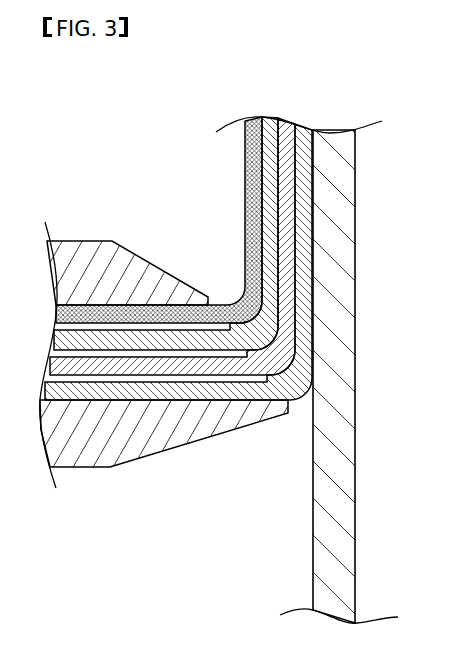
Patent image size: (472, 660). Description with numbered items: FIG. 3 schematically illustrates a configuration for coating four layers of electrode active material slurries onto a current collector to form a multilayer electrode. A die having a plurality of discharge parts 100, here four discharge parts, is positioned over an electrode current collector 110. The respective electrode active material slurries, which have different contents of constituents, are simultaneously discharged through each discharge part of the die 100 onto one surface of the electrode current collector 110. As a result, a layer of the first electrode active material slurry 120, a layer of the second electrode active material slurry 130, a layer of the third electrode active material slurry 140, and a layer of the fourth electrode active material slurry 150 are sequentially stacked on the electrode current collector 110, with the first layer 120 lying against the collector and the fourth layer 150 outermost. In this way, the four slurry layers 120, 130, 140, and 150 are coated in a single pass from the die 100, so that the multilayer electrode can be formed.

The die having a plurality of discharge parts 100 is at (73, 240).
The electrode current collector 110 is at (356, 343).
The layer of the first electrode active material slurry 120 is at (305, 124).
The layer of the second electrode active material slurry 130 is at (287, 119).
The layer of the third electrode active material slurry 140 is at (268, 118).
The layer of the fourth electrode active material slurry 150 is at (253, 118).